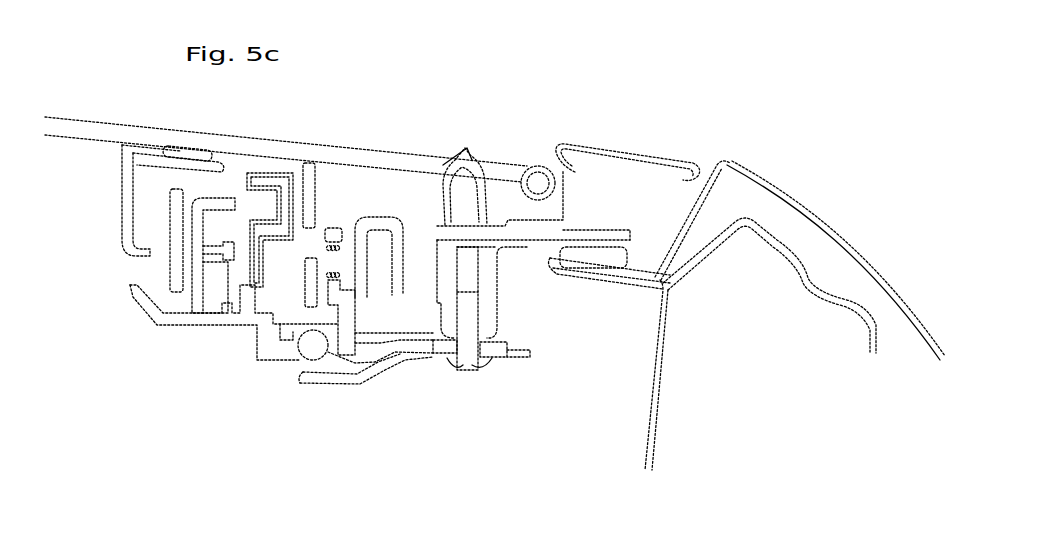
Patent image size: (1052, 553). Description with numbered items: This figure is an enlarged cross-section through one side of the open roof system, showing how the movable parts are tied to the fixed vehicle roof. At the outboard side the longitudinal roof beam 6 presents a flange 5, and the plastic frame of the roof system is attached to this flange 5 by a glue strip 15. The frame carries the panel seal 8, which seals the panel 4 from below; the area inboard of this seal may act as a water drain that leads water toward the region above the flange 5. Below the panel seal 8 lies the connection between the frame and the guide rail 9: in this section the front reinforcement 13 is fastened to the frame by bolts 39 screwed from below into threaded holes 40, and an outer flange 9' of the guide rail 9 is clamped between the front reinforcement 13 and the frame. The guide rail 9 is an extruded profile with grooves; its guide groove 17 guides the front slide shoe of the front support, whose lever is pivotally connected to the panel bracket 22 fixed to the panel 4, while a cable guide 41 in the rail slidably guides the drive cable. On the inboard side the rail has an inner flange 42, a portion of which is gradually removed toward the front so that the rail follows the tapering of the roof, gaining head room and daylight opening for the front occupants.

The panel 4 is at (333, 152).
The threaded holes 40 is at (467, 262).
The panel seal 8 is at (493, 170).
The panel bracket 22 is at (175, 270).
The inner flange 42 is at (150, 310).
The guide groove 17 is at (207, 237).
The guide rail 9 is at (312, 363).
The cable guide 41 is at (318, 343).
The front reinforcement 13 is at (330, 377).
The bolts 39 is at (468, 363).
The outer flange 9' is at (508, 402).
The glue strip 15 is at (560, 253).
The flange 5 is at (590, 272).
The roof beam 6 is at (715, 242).